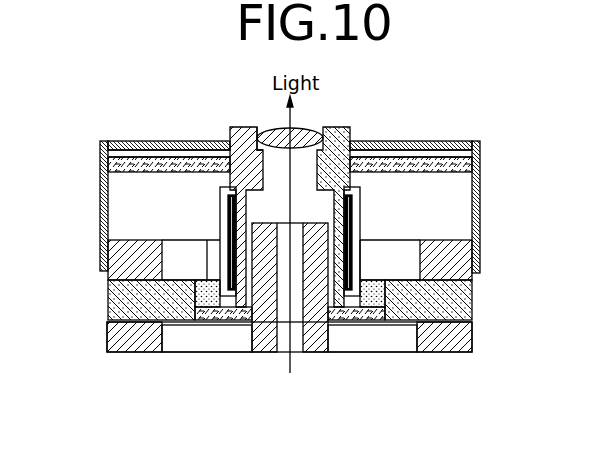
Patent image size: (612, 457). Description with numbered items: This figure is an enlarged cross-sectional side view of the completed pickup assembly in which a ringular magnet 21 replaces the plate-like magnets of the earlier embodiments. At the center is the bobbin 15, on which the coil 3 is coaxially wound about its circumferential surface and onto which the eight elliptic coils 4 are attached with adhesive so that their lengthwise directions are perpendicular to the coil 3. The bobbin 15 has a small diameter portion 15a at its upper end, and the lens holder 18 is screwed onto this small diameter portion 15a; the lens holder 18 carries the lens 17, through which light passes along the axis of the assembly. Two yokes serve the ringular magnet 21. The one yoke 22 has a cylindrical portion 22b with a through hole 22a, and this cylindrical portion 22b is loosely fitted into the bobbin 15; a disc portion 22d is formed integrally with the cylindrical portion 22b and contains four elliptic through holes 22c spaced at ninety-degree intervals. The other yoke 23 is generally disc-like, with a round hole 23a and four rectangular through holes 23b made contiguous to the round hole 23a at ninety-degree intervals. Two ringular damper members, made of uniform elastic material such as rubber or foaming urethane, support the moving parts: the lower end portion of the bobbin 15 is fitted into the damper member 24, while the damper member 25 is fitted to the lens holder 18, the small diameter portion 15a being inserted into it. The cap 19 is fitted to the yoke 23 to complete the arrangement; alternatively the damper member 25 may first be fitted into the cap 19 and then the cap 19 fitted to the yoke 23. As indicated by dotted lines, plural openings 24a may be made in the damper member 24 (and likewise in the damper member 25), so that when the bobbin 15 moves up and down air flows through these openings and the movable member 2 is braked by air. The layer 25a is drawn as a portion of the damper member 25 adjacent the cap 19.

The movable member 2 is at (378, 165).
The coil 3 is at (230, 224).
The elliptic coils 4 is at (222, 201).
The bobbin 15 is at (335, 168).
The small diameter portion 15a is at (250, 160).
The lens 17 is at (300, 135).
The lens holder 18 is at (235, 133).
The cap 19 is at (100, 206).
The ringular magnet 21 is at (452, 304).
The yoke 22 is at (460, 344).
The through hole 22a is at (300, 338).
The cylindrical portion 22b is at (334, 340).
The elliptic through holes 22c is at (164, 345).
The disc portion 22d is at (107, 336).
The yoke 23 is at (450, 263).
The round hole 23a is at (366, 256).
The rectangular through holes 23b is at (165, 250).
The damper member 24 is at (212, 324).
The openings 24a is at (225, 318).
The damper member 25 is at (441, 158).
The cover plate layer 25a is at (410, 158).